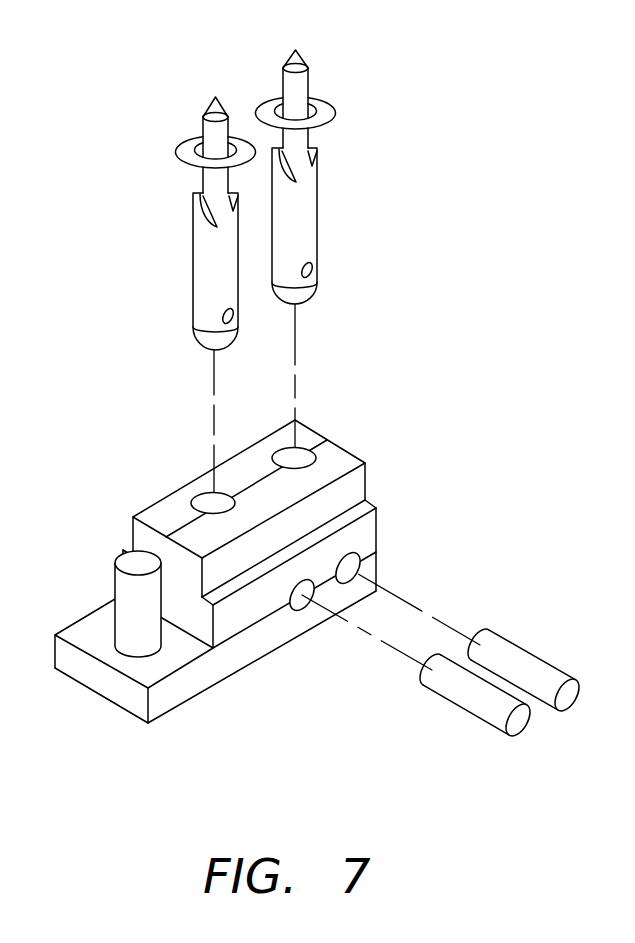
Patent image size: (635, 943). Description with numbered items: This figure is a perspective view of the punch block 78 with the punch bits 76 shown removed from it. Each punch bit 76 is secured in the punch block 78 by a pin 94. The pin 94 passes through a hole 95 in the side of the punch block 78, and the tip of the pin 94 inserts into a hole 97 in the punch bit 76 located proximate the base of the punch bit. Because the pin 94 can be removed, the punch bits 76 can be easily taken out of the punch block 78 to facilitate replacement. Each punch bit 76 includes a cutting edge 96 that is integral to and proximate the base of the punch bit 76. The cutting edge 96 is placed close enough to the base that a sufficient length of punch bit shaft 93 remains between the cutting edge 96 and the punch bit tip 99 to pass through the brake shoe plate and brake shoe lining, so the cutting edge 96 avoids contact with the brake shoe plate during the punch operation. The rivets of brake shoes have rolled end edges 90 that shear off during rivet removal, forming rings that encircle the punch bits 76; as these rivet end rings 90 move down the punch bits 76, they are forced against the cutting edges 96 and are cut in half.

The punch bit 76 is at (343, 226).
The punch block 78 is at (253, 577).
The rolled end edges (rivet end rings) 90 is at (178, 151).
The punch bit shaft 93 is at (309, 82).
The pin 94 is at (533, 653).
The hole 95 is at (307, 607).
The cutting edge 96 is at (313, 148).
The hole 97 is at (313, 265).
The punch bit tip 99 is at (214, 99).